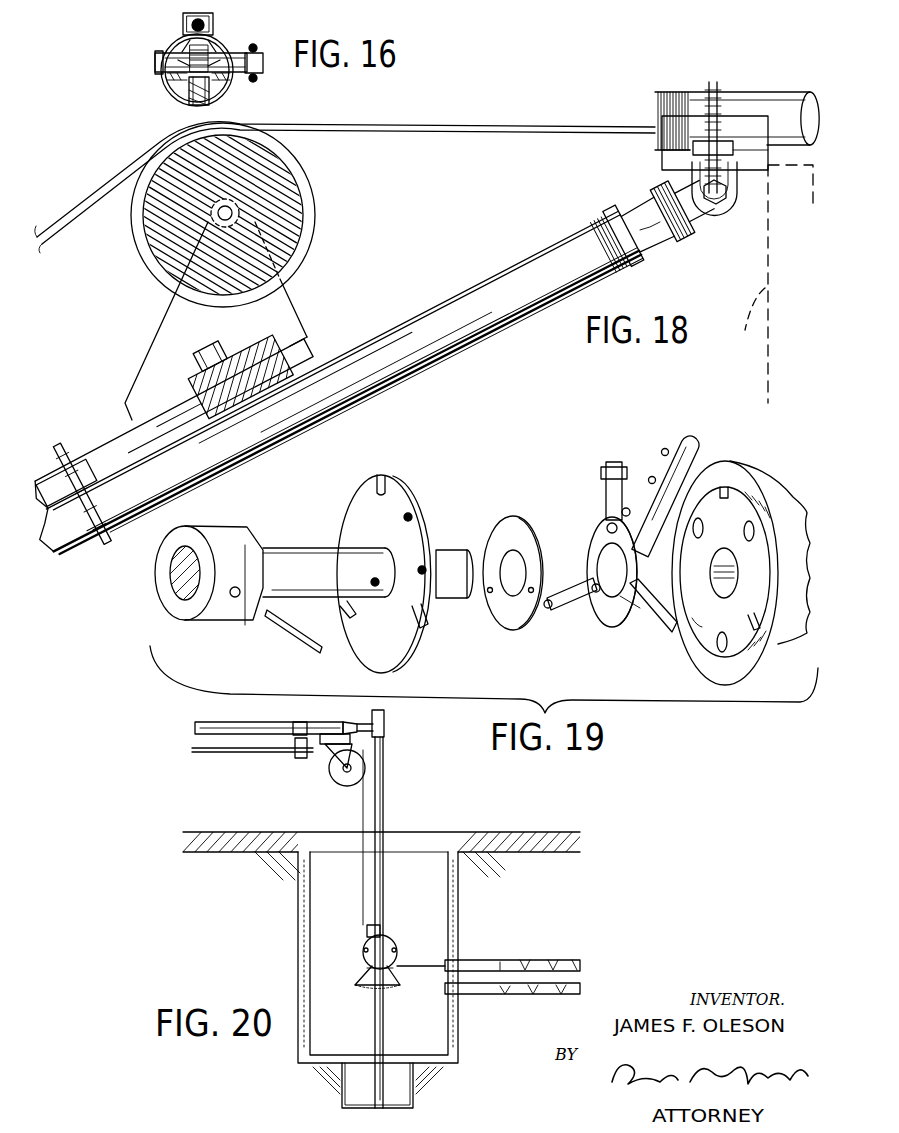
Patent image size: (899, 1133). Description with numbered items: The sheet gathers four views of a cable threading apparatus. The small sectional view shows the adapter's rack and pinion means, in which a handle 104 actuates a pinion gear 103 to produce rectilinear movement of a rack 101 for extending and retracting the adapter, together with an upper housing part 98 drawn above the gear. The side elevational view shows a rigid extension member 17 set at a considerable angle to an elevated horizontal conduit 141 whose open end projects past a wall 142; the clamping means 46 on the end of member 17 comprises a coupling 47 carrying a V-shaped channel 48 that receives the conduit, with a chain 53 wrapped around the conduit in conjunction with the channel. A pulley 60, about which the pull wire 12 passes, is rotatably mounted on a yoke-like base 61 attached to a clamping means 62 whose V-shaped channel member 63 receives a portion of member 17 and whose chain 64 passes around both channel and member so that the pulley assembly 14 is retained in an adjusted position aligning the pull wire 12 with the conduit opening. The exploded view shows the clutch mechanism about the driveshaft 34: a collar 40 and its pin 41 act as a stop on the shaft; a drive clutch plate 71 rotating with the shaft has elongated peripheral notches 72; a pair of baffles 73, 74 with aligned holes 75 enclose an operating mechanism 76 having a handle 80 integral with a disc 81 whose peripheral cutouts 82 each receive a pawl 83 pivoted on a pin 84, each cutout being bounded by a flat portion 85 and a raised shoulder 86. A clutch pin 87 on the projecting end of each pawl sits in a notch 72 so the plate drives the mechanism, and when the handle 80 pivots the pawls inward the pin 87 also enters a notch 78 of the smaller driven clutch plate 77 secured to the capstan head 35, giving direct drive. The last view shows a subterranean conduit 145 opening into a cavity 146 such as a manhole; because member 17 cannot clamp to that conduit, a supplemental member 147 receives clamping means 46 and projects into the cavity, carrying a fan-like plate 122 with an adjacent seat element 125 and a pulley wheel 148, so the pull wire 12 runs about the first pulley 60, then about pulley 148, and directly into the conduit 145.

In FIG. 18, the pull wire 12 is at (432, 128).
In FIG. 20, the pull wire 12 is at (250, 752).
In FIG. 18, the pulley assembly 14 is at (365, 272).
In FIG. 18, the rigid extension member 17 is at (476, 278).
In FIG. 20, the rigid extension member 17 is at (232, 724).
In FIG. 19, the driveshaft 34 is at (283, 548).
In FIG. 19, the capstan head 35 is at (762, 480).
In FIG. 19, the collar 40 is at (225, 532).
In FIG. 19, the pin 41 is at (288, 632).
In FIG. 18, the clamping means 46 is at (733, 232).
In FIG. 20, the clamping means 46 is at (371, 703).
In FIG. 18, the coupling 47 is at (700, 238).
In FIG. 18, the V-shaped channel 48 is at (662, 165).
In FIG. 18, the chain 53 is at (712, 82).
In FIG. 18, the pulley 60 is at (318, 210).
In FIG. 20, the pulley 60 is at (340, 787).
In FIG. 18, the yoke-like base 61 is at (172, 304).
In FIG. 18, the clamping means 62 is at (78, 384).
In FIG. 18, the V-shaped channel member 63 is at (108, 445).
In FIG. 18, the chain 64 is at (100, 547).
In FIG. 19, the drive clutch plate 71 is at (412, 481).
In FIG. 19, the notch 72 is at (381, 474).
In FIG. 19, the baffle 73 is at (533, 526).
In FIG. 19, the baffle 74 is at (642, 575).
In FIG. 19, the hole 75 is at (510, 530).
In FIG. 19, the operating mechanism 76 is at (582, 623).
In FIG. 19, the driven clutch plate 77 is at (712, 495).
In FIG. 19, the notch 78 is at (725, 500).
In FIG. 19, the handle 80 is at (670, 440).
In FIG. 19, the disc 81 is at (618, 625).
In FIG. 19, the cutout portion 82 is at (596, 538).
In FIG. 19, the pawl 83 is at (603, 490).
In FIG. 19, the pivot pin 84 is at (606, 525).
In FIG. 19, the flat portion 85 is at (598, 608).
In FIG. 19, the raised shoulder portion 86 is at (632, 505).
In FIG. 19, the clutch pin 87 is at (613, 466).
In FIG. 16, the housing cap 98 is at (214, 32).
In FIG. 16, the rack 101 is at (185, 100).
In FIG. 16, the pinion gear 103 is at (188, 46).
In FIG. 16, the handle 104 is at (258, 50).
In FIG. 20, the fan-like plate 122 is at (360, 975).
In FIG. 20, the seat 125 is at (368, 962).
In FIG. 18, the conduit 141 is at (752, 92).
In FIG. 18, the wall 142 is at (767, 284).
In FIG. 20, the subterranean conduit 145 is at (490, 966).
In FIG. 20, the subterranean cavity 146 is at (450, 878).
In FIG. 20, the supplemental member 147 is at (385, 792).
In FIG. 20, the pulley wheel 148 is at (392, 945).